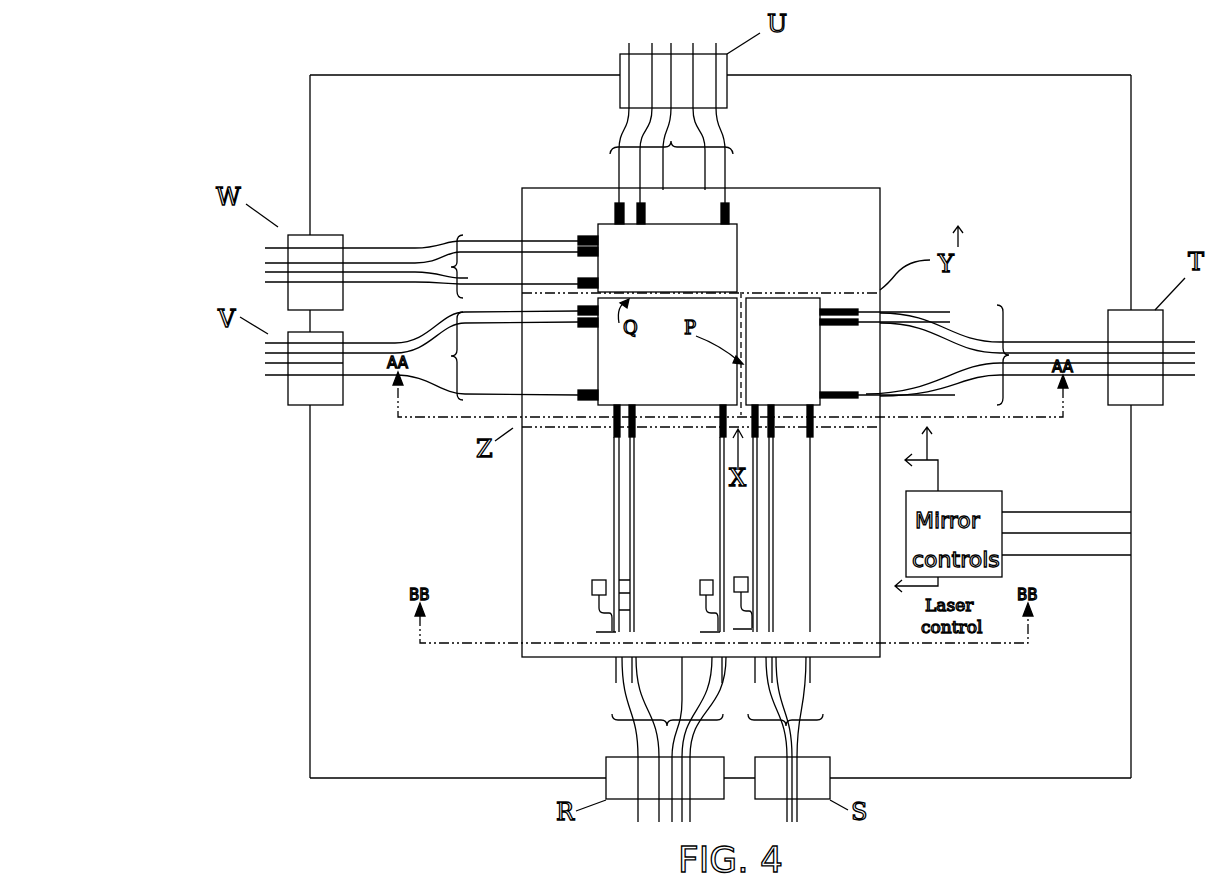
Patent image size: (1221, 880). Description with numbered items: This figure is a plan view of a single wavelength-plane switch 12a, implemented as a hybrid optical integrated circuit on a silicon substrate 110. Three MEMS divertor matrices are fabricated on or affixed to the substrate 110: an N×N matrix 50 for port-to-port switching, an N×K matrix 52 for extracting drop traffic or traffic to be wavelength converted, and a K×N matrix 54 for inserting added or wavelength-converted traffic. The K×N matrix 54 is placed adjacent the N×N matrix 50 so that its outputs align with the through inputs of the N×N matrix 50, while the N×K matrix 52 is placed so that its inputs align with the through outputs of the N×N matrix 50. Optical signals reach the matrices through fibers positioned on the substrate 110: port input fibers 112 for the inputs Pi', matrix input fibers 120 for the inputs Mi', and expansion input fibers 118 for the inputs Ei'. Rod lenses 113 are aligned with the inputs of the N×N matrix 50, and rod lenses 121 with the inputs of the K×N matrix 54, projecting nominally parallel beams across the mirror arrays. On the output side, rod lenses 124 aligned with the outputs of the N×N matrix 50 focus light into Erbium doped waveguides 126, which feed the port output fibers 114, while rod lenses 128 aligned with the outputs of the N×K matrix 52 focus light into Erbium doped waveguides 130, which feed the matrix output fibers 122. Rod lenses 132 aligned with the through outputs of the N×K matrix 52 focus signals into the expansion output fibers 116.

The wavelength-plane switch 12a is at (458, 162).
The silicon substrate 110 is at (548, 188).
The expansion input optical fibers 118 is at (745, 175).
The rod lenses 121 is at (585, 233).
The K×N matrix 54 is at (738, 248).
The N×N matrix 50 is at (742, 299).
The N×K matrix 52 is at (780, 300).
The rod lenses 132 is at (833, 296).
The expansion output optical fibers 116 is at (954, 300).
The matrix input optical fibers 120 is at (503, 230).
The port input optical fibers 112 is at (478, 407).
The rod lenses 113 is at (582, 402).
The rod lenses 124 is at (604, 433).
The Erbium doped waveguides 126 is at (604, 463).
The rod lenses 128 is at (824, 433).
The Erbium doped waveguides 130 is at (824, 462).
The port output optical fibers 114 is at (601, 681).
The matrix output optical fibers 122 is at (832, 681).